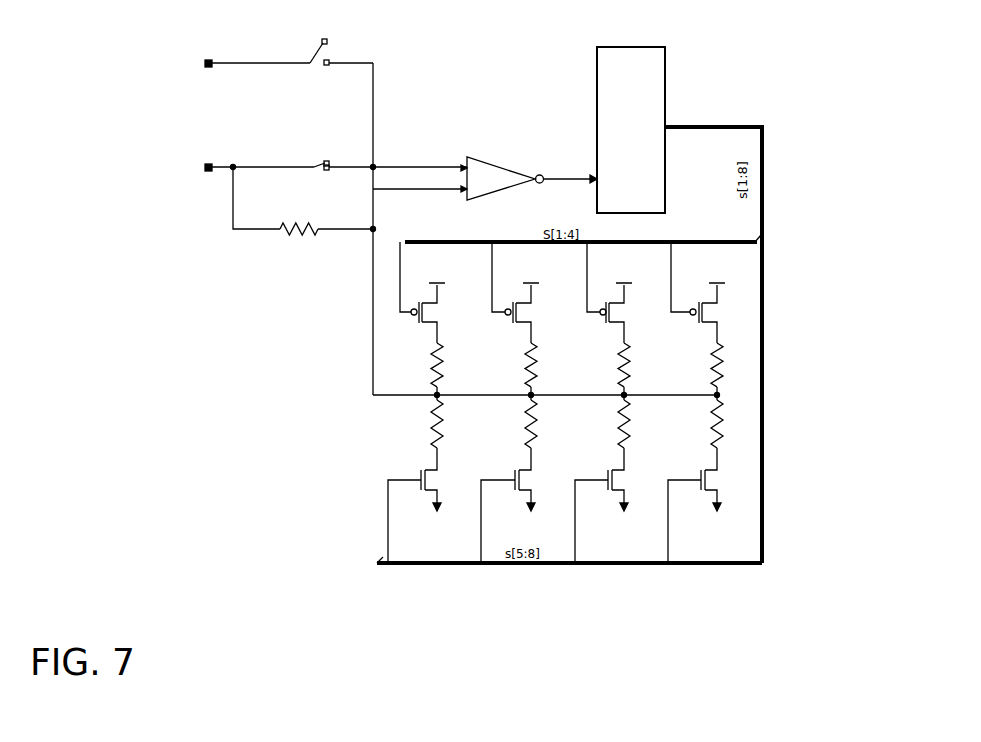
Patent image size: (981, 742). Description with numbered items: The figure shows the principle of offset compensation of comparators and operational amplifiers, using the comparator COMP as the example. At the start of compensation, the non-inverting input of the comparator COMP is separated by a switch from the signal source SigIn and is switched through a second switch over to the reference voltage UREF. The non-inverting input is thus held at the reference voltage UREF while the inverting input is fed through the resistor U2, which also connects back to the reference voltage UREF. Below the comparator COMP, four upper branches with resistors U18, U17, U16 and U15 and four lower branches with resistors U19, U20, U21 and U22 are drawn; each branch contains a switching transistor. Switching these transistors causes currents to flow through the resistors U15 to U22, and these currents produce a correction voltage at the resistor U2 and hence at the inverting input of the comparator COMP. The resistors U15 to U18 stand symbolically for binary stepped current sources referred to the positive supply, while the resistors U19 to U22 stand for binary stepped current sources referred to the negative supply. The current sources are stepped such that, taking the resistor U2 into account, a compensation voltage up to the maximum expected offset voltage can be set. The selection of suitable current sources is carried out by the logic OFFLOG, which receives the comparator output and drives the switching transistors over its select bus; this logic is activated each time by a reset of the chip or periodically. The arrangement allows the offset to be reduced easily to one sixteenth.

The signal source SigIn is at (233, 64).
The reference voltage UREF is at (235, 168).
The resistor U2 is at (303, 201).
The comparator COMP is at (529, 183).
The logic OFFLOG is at (631, 130).
The resistor U15 is at (702, 321).
The resistor U16 is at (614, 321).
The resistor U17 is at (520, 321).
The resistor U18 is at (427, 321).
The resistor U19 is at (420, 478).
The resistor U20 is at (514, 478).
The resistor U21 is at (607, 478).
The resistor U22 is at (700, 478).